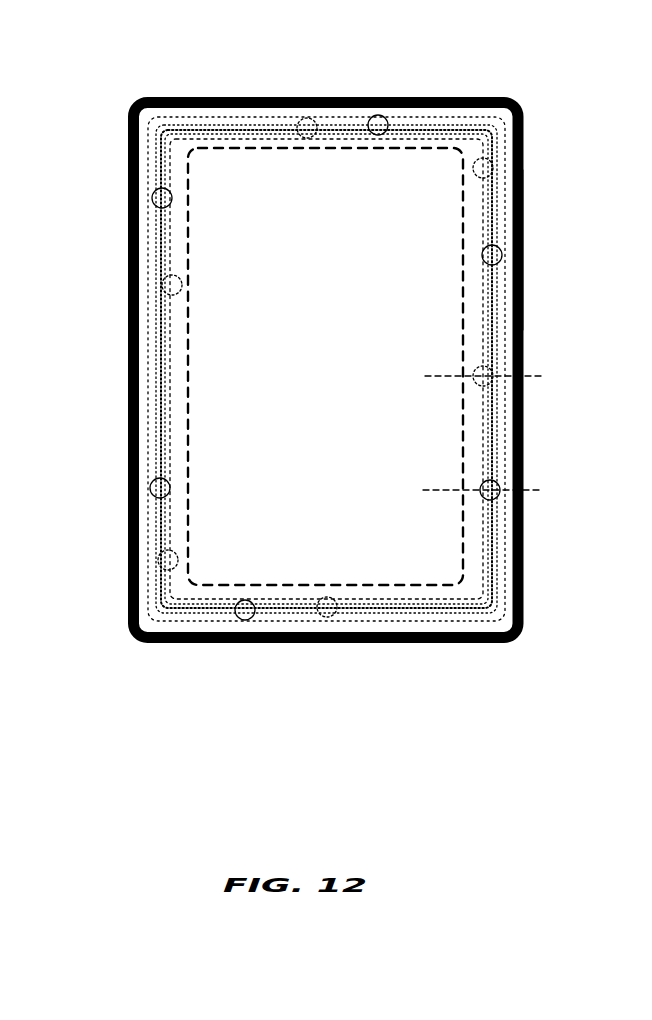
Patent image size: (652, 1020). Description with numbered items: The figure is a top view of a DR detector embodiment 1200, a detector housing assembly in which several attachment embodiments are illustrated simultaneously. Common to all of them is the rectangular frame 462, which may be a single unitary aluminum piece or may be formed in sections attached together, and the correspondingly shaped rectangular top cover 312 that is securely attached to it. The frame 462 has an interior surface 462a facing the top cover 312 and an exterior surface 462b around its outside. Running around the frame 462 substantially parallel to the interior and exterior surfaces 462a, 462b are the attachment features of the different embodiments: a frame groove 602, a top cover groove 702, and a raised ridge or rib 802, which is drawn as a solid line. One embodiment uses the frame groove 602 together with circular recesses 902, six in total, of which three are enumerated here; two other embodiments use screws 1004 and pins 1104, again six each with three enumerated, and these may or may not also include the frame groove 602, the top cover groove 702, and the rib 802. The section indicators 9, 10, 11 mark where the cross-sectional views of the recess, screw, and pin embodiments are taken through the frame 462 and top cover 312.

The DR detector embodiment 1200 is at (374, 427).
The frame 462 is at (523, 158).
The interior surface 462a is at (463, 226).
The exterior surface 462b is at (523, 249).
The top cover 312 is at (285, 190).
The frame groove 602 is at (190, 117).
The top cover groove 702 is at (247, 125).
The raised ridge or rib 802 is at (418, 130).
The circular recesses 902 is at (162, 286).
The screws 1004 is at (271, 432).
The pins 1104 is at (207, 688).
The section line for FIG. 9 is at (425, 376).
The section line for FIG. 10 is at (490, 462).
The section line for FIG. 11 is at (423, 490).